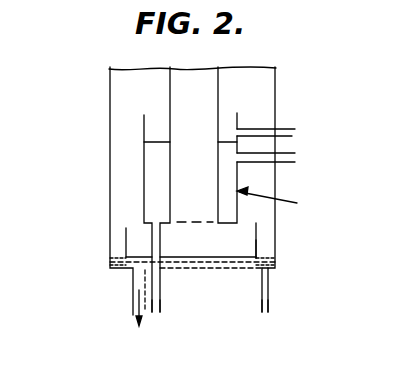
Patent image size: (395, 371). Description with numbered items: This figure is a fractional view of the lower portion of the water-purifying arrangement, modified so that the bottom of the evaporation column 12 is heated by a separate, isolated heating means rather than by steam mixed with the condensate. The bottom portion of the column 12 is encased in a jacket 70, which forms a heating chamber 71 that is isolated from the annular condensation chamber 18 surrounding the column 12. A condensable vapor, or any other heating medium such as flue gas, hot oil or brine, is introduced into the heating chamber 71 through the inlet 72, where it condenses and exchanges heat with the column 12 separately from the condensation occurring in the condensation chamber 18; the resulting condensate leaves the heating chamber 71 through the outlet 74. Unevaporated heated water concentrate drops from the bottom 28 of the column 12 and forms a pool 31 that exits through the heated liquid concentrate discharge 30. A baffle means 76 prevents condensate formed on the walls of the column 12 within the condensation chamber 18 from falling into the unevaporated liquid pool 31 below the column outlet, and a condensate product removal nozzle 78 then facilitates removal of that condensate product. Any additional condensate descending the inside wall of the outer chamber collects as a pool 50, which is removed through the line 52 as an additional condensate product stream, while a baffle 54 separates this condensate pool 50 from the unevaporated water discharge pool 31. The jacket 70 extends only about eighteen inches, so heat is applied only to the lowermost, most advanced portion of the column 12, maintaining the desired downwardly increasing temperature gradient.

The evaporation column 12 is at (218, 101).
The condensation chamber 18 is at (257, 78).
The baffle means 76 is at (144, 123).
The heating chamber 71 is at (228, 205).
The condensate product removal nozzle 78 is at (295, 129).
The inlet 72 is at (295, 162).
The jacket 70 is at (281, 201).
The unevaporated liquid pool 31 is at (182, 272).
The bottom of chamber 28 is at (197, 224).
The heated liquid concentrate discharge 30 is at (132, 289).
The outlet 74 is at (160, 308).
The baffle 54 is at (263, 242).
The condensate pool 50 is at (256, 270).
The line 52 is at (270, 303).